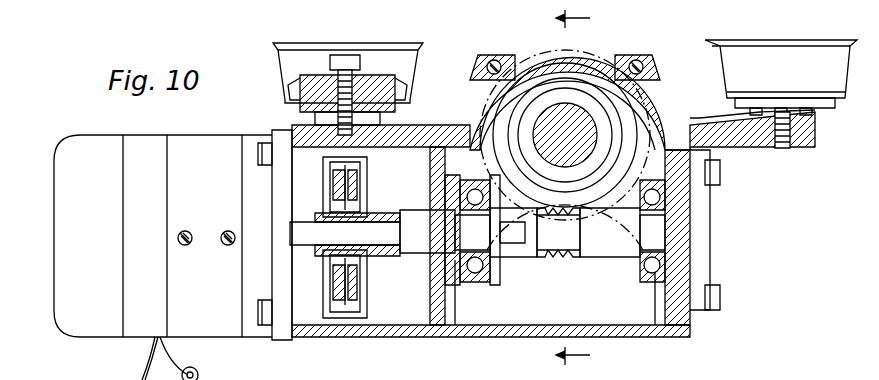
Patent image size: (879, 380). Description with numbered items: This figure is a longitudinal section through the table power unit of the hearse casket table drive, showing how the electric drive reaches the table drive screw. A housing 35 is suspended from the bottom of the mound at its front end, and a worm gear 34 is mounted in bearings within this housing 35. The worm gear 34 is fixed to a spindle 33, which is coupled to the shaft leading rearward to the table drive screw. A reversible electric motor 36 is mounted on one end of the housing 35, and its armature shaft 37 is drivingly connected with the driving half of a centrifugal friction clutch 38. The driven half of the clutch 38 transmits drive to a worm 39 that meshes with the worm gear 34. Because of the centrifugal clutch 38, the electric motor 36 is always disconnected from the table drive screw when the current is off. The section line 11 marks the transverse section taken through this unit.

The section line 11 is at (577, 187).
The spindle 33 is at (538, 143).
The worm gear 34 is at (648, 126).
The housing 35 is at (660, 74).
The reversible electric motor 36 is at (80, 136).
The armature shaft 37 is at (310, 222).
The centrifugal friction clutch 38 is at (367, 170).
The worm 39 is at (555, 258).